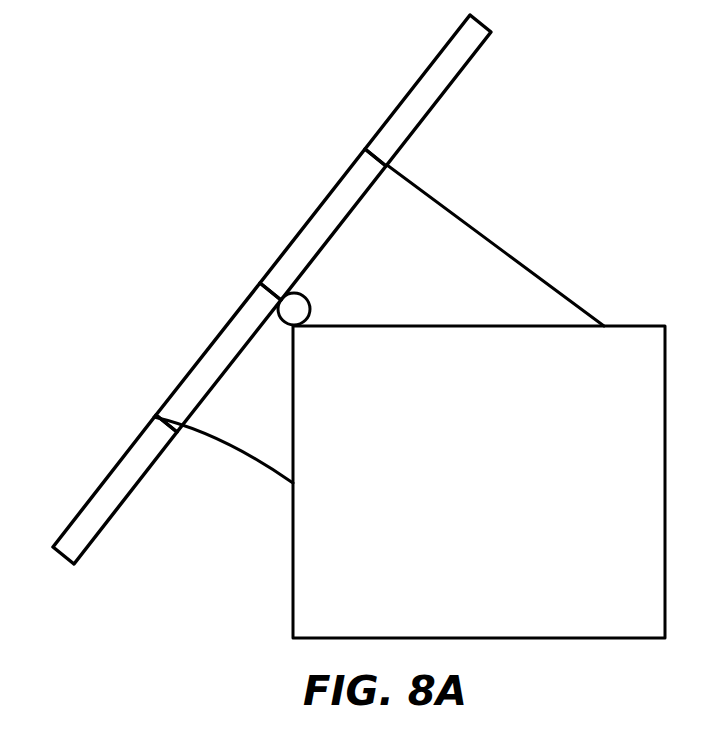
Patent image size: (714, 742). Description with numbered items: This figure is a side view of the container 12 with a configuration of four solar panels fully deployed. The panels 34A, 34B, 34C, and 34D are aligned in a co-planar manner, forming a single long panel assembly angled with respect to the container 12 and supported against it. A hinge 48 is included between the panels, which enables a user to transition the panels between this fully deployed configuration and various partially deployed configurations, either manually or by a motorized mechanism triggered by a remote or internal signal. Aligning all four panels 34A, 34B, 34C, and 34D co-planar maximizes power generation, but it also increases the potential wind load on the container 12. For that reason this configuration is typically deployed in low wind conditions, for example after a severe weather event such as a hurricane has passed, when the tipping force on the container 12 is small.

The container 12 is at (458, 525).
The panel 34A is at (395, 110).
The panel 34B is at (300, 232).
The panel 34C is at (183, 381).
The panel 34D is at (105, 480).
The hinge 48 is at (307, 297).